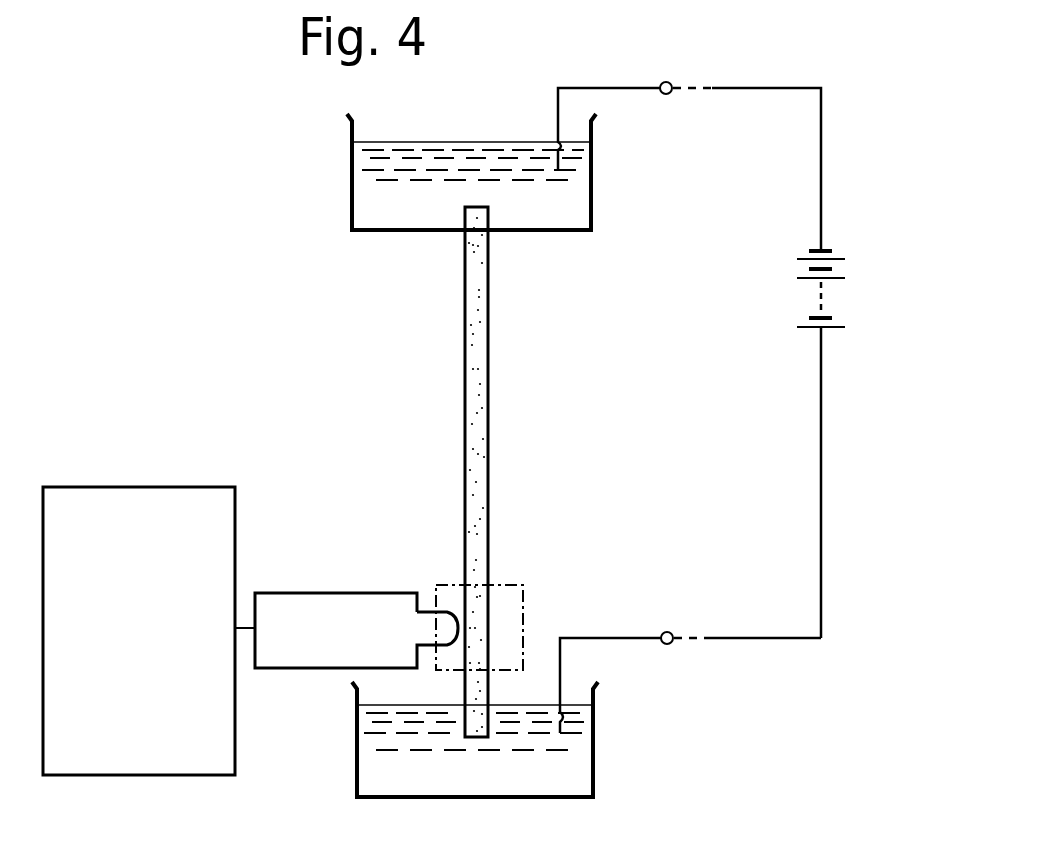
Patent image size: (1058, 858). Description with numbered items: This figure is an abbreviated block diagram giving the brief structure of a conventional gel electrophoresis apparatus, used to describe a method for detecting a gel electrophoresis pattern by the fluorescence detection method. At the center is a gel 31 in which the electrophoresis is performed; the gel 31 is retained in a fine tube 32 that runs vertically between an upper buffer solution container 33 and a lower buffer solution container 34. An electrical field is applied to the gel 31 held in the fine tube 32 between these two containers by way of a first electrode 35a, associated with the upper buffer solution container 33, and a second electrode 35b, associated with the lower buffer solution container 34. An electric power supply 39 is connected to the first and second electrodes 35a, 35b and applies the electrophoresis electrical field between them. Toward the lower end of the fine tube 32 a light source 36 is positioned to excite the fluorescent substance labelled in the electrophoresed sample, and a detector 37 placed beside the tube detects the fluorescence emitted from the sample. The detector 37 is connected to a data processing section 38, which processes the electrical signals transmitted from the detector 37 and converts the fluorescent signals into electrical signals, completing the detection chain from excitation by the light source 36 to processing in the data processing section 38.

The gel 31 is at (480, 320).
The fine tube 32 is at (489, 385).
The upper buffer solution container 33 is at (587, 208).
The lower buffer solution container 34 is at (590, 776).
The first electrode 35a is at (600, 88).
The second electrode 35b is at (599, 638).
The light source 36 is at (507, 585).
The detector 37 is at (368, 593).
The data processing section 38 is at (203, 487).
The electric power supply 39 is at (838, 294).